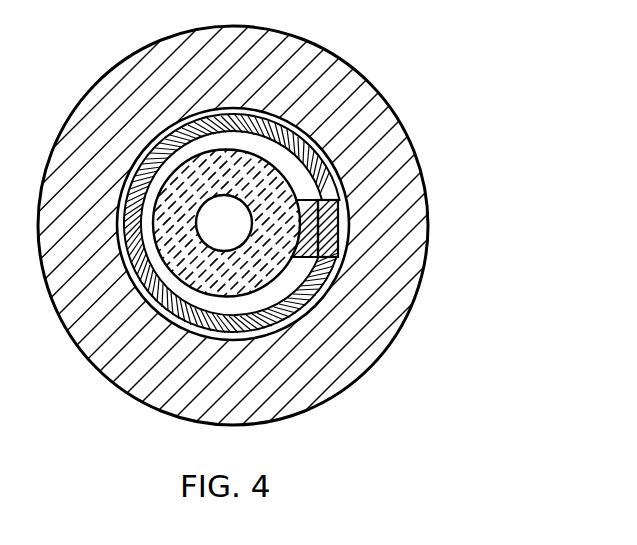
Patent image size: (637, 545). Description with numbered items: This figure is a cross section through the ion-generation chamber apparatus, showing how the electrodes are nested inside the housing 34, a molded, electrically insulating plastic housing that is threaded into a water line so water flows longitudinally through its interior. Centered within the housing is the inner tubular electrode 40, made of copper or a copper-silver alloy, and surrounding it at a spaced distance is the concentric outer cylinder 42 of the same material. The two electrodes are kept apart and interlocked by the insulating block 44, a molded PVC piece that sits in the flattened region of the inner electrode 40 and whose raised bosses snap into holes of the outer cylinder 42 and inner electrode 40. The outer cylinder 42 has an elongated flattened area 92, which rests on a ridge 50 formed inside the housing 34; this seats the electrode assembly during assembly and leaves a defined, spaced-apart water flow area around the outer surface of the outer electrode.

The housing 34 is at (405, 184).
The outer cylinder 42 is at (300, 132).
The ridge 50 is at (336, 268).
The inner tubular electrode 40 is at (200, 273).
The flattened area 92 is at (334, 250).
The block 44 is at (318, 232).